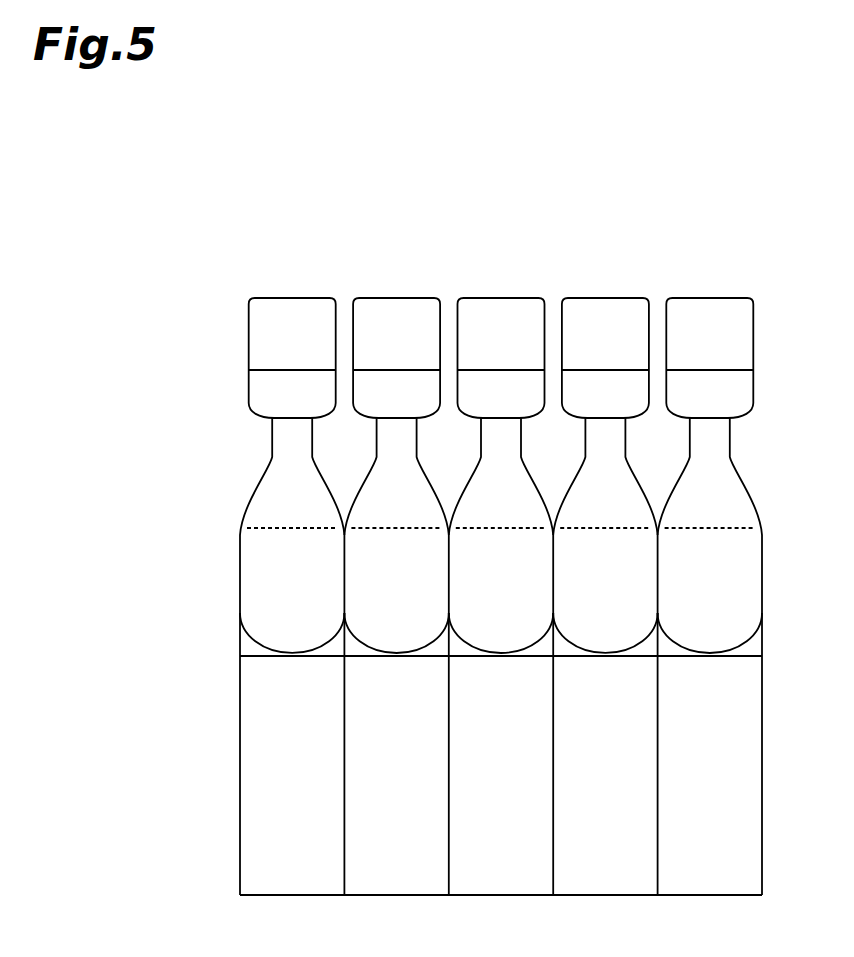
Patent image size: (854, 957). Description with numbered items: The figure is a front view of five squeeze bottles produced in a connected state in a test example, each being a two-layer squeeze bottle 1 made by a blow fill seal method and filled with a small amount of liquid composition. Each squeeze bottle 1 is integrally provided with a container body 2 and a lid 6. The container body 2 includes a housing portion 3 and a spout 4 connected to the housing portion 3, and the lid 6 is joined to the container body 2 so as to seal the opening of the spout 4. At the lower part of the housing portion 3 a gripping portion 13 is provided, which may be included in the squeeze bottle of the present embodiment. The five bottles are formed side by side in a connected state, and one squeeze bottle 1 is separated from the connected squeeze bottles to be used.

The squeeze bottle 1 is at (211, 256).
The container body 2 is at (189, 428).
The housing portion 3 is at (262, 578).
The spout 4 is at (295, 432).
The lid 6 is at (226, 300).
The gripping portion 13 is at (260, 777).